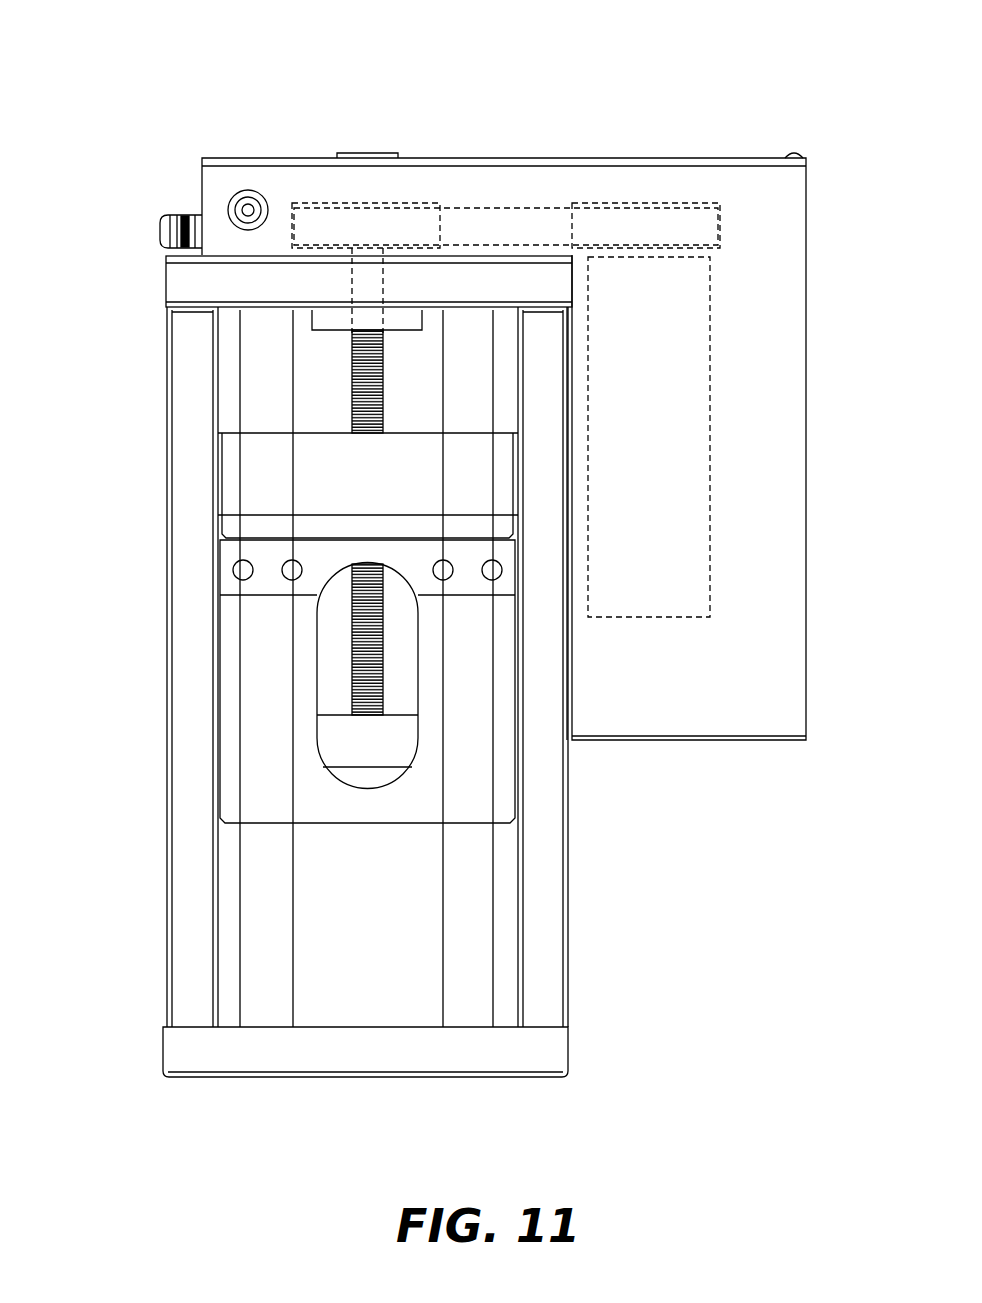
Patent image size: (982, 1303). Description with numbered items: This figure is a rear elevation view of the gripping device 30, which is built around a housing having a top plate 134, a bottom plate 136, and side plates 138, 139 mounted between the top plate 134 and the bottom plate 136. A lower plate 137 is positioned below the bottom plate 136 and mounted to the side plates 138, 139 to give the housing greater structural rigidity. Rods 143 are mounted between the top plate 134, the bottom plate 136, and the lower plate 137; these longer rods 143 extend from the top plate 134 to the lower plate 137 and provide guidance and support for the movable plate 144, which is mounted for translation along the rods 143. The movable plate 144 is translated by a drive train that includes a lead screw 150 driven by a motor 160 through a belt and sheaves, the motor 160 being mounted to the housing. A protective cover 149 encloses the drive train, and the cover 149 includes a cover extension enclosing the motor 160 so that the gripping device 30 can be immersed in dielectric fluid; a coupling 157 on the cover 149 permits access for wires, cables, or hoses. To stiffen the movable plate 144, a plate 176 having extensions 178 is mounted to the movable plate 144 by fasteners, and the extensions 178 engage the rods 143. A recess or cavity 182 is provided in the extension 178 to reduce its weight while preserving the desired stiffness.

The gripping device 30 is at (573, 82).
The protective cover 149 is at (493, 157).
The coupling 157 is at (159, 231).
The top plate 134 is at (175, 285).
The side plate 139 is at (175, 641).
The side plate 138 is at (548, 872).
The lower plate 137 is at (548, 1047).
The rod 143 is at (465, 900).
The lead screw 150 is at (353, 388).
The movable plate 144 is at (412, 487).
The extension 178 is at (245, 806).
The plate 176 is at (469, 572).
The recess or cavity 182 is at (318, 658).
The bottom plate 136 is at (380, 800).
The motor 160 is at (652, 604).